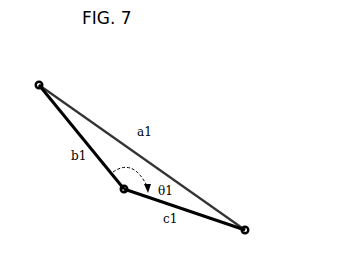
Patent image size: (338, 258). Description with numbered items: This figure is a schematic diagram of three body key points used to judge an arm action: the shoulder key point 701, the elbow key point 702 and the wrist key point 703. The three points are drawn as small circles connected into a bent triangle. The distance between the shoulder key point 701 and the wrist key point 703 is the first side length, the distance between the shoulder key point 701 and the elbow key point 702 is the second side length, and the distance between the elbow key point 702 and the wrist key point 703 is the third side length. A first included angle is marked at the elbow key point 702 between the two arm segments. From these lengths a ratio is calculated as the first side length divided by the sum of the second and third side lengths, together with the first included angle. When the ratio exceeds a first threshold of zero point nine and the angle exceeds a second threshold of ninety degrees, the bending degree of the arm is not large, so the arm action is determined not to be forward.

The shoulder key point 701 is at (39, 71).
The elbow key point 702 is at (109, 199).
The wrist key point 703 is at (261, 230).